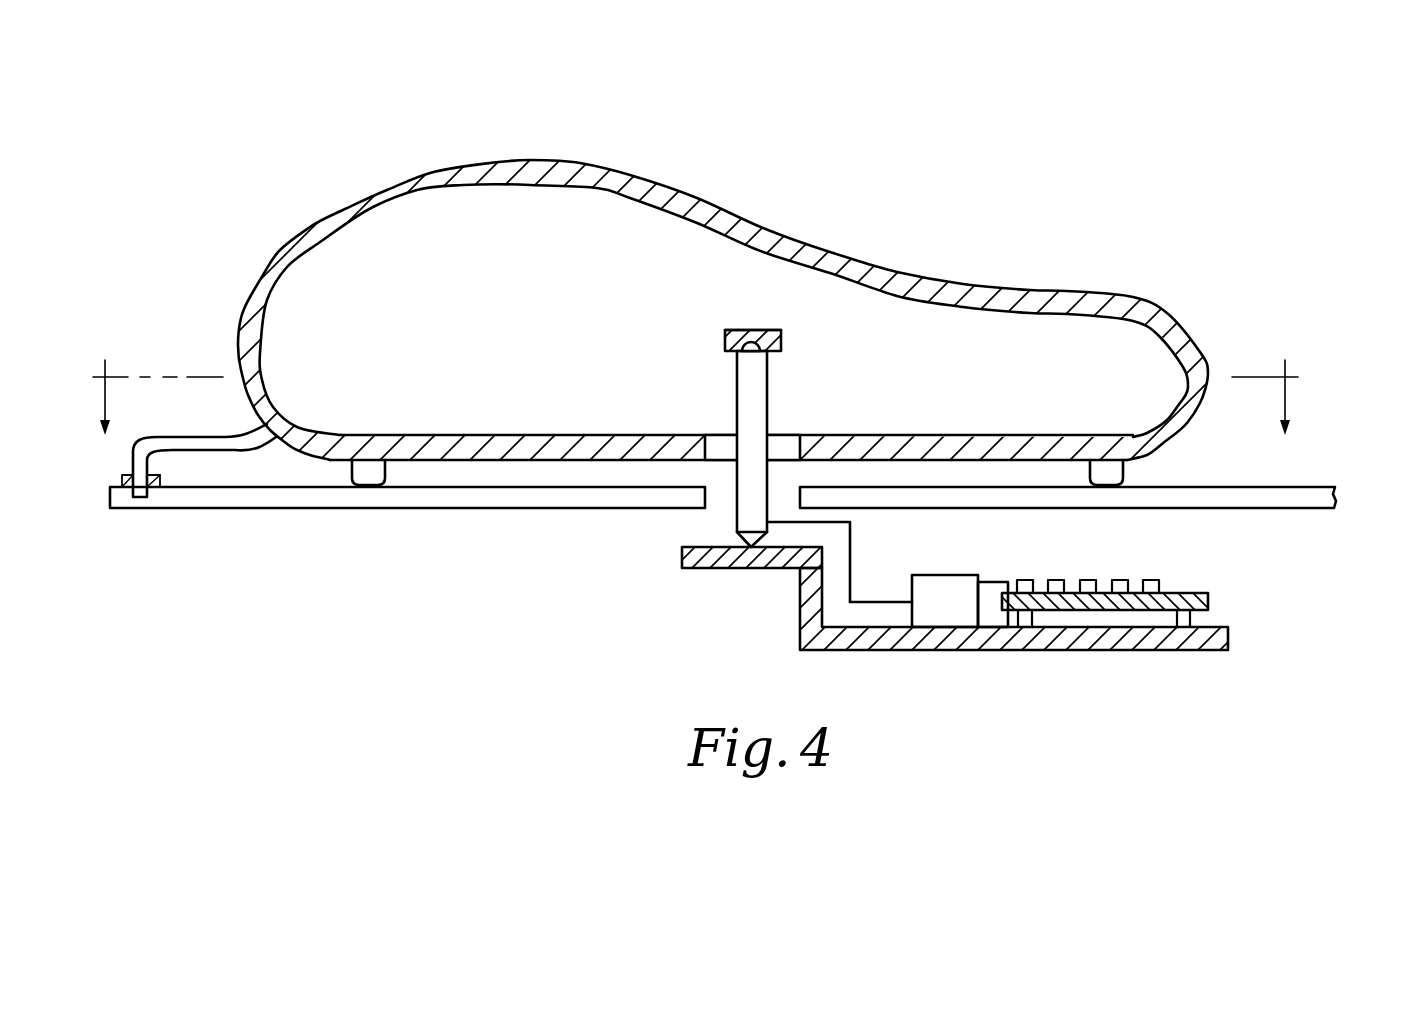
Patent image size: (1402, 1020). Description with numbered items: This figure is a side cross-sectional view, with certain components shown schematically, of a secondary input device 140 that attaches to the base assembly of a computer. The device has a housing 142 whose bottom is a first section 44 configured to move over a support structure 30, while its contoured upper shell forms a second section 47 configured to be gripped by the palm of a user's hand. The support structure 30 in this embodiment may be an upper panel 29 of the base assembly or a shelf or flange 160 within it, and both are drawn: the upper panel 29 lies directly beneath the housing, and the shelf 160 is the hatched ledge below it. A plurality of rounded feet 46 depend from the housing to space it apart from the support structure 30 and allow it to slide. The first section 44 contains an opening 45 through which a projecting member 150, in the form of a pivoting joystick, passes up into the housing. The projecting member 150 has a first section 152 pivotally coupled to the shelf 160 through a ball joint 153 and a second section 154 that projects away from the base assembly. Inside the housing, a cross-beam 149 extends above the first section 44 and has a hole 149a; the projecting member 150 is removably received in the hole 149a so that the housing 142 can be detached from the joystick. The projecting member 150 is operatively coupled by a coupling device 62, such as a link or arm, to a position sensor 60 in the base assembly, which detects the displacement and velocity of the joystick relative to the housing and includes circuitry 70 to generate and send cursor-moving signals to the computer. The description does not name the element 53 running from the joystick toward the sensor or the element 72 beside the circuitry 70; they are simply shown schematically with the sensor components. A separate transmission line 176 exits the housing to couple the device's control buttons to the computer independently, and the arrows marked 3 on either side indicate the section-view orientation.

The secondary input device 140 is at (160, 140).
The housing 142 is at (764, 310).
The second section 47 is at (757, 235).
The first section 44 is at (731, 427).
The opening 45 is at (722, 445).
The feet 46 is at (368, 480).
The separate transmission line 176 is at (237, 452).
The upper panel 29 is at (1297, 493).
The support structure 30 is at (751, 572).
The shelf 160 is at (935, 602).
The ball joint 153 is at (773, 562).
The wire lead 53 is at (848, 557).
The coupling device 62 is at (883, 598).
The position sensor 60 is at (945, 575).
The connector block 72 is at (1000, 582).
The circuitry 70 is at (1173, 593).
The second section 154 is at (721, 430).
The cross-beam 149 is at (761, 333).
The hole 149a is at (745, 330).
The first section 152 is at (736, 521).
The projecting member 150 is at (710, 473).
The section line 3 is at (695, 416).